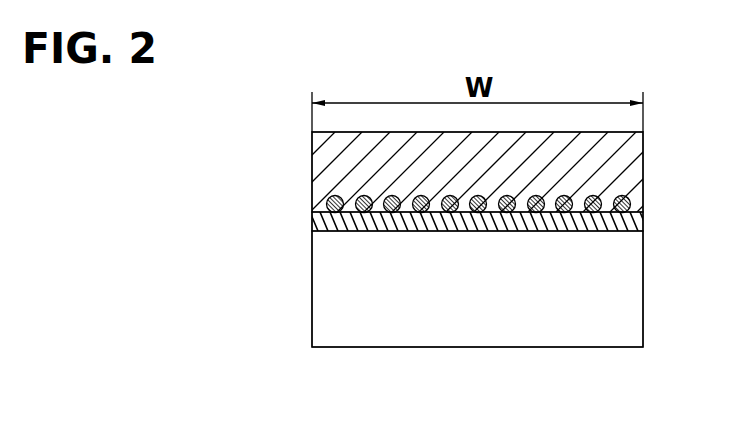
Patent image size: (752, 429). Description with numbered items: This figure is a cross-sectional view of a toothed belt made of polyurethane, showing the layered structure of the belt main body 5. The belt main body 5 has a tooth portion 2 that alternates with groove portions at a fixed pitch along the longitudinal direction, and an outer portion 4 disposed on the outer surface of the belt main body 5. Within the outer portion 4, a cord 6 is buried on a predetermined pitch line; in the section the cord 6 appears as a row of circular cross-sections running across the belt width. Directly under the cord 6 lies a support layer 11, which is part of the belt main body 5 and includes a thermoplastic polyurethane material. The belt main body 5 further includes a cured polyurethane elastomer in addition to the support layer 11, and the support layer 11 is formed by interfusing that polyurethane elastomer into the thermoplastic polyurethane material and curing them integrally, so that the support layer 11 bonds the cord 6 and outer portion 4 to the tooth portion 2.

The tooth portion 2 is at (310, 232).
The outer portion 4 is at (310, 132).
The belt main body 5 is at (262, 167).
The cord 6 is at (626, 197).
The support layer 11 is at (523, 232).